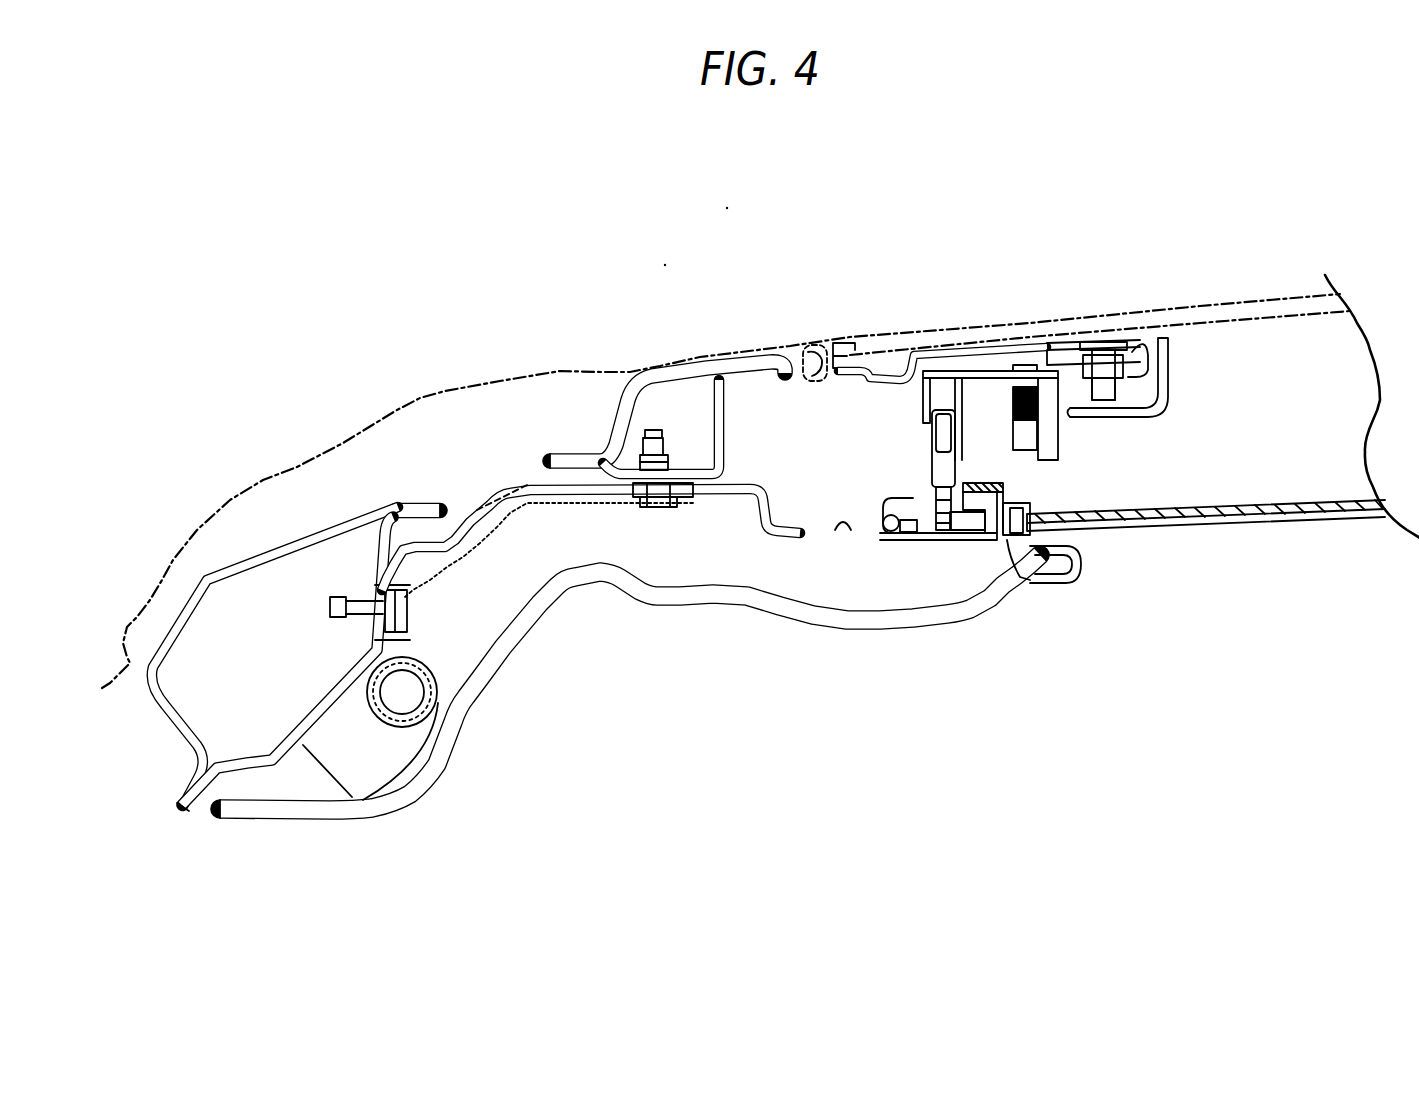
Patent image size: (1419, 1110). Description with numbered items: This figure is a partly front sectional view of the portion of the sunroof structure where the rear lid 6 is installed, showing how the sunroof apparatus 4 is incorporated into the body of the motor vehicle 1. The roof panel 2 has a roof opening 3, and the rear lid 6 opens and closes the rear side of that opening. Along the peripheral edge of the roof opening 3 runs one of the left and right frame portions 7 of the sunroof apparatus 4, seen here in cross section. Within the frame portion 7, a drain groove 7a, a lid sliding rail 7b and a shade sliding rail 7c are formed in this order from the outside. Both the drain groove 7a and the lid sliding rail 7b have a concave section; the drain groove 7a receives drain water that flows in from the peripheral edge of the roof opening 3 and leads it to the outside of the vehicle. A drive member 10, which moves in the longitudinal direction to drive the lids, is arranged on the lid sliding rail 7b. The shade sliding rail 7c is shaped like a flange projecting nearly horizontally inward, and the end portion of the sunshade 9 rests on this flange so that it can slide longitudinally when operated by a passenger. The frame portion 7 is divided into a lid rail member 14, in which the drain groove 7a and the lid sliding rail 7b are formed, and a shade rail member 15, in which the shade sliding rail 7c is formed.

The motor vehicle 1 is at (316, 392).
The roof panel 2 is at (560, 370).
The roof opening 3 is at (812, 380).
The sunroof apparatus 4 is at (1229, 247).
The rear lid 6 is at (1100, 312).
The frame portion 7 is at (758, 464).
The drain groove 7a is at (827, 530).
The lid sliding rail 7b is at (960, 520).
The shade sliding rail 7c is at (1046, 577).
The sunshade 9 is at (1247, 528).
The drive member 10 is at (937, 497).
The lid rail member 14 is at (765, 523).
The shade rail member 15 is at (1003, 567).